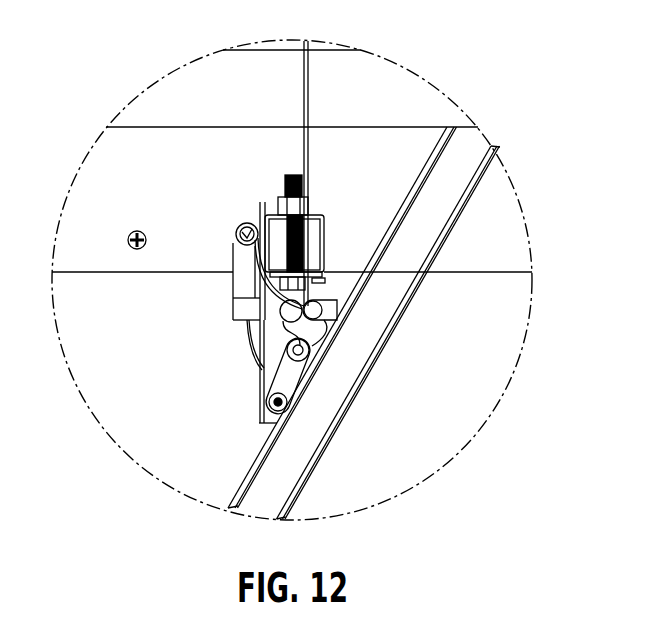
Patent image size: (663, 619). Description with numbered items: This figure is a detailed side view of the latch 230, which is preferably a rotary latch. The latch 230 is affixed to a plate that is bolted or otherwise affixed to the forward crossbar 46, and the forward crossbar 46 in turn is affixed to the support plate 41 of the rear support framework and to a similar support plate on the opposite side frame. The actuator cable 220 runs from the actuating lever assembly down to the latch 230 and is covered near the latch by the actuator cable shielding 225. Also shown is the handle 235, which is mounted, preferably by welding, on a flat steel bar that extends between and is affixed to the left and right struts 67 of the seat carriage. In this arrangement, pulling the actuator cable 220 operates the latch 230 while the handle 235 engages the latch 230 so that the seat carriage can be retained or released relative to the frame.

The support plate 41 is at (182, 147).
The actuator cable 220 is at (308, 107).
The forward crossbar 46 is at (325, 225).
The actuator cable shielding 225 is at (230, 250).
The handle 235 is at (337, 307).
The latch 230 is at (265, 373).
The struts 67 is at (322, 420).